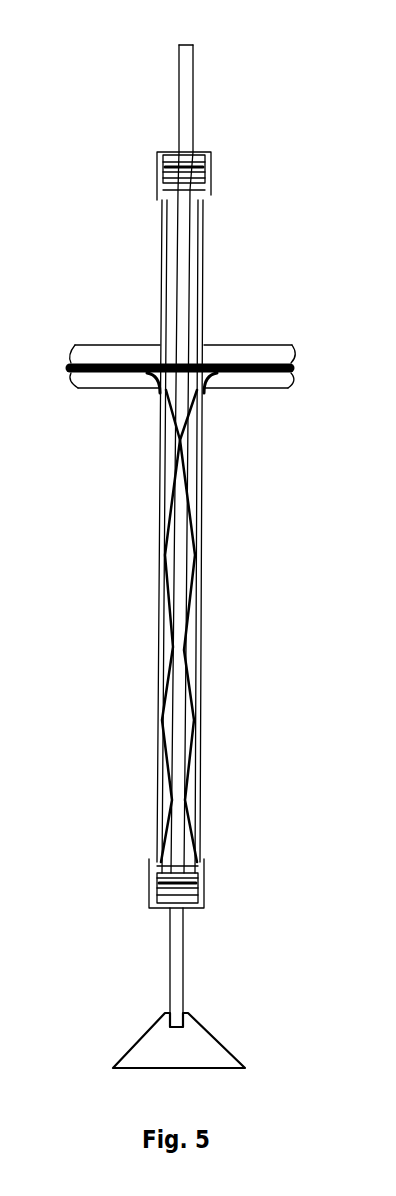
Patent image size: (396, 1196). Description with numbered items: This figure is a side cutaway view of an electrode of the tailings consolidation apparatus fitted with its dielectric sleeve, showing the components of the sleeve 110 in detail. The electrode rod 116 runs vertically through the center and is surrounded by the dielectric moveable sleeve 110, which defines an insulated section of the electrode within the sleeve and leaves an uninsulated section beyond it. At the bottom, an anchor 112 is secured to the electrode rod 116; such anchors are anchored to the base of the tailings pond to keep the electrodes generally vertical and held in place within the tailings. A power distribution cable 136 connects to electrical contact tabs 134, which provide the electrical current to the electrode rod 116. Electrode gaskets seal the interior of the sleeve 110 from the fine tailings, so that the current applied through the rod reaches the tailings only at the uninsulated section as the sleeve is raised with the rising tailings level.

The dielectric moveable sleeve 110 is at (158, 729).
The anchor 112 is at (187, 1037).
The electrode rod 116 is at (185, 85).
The electrical contact tab 134 is at (250, 560).
The power distribution cable 136 is at (250, 372).